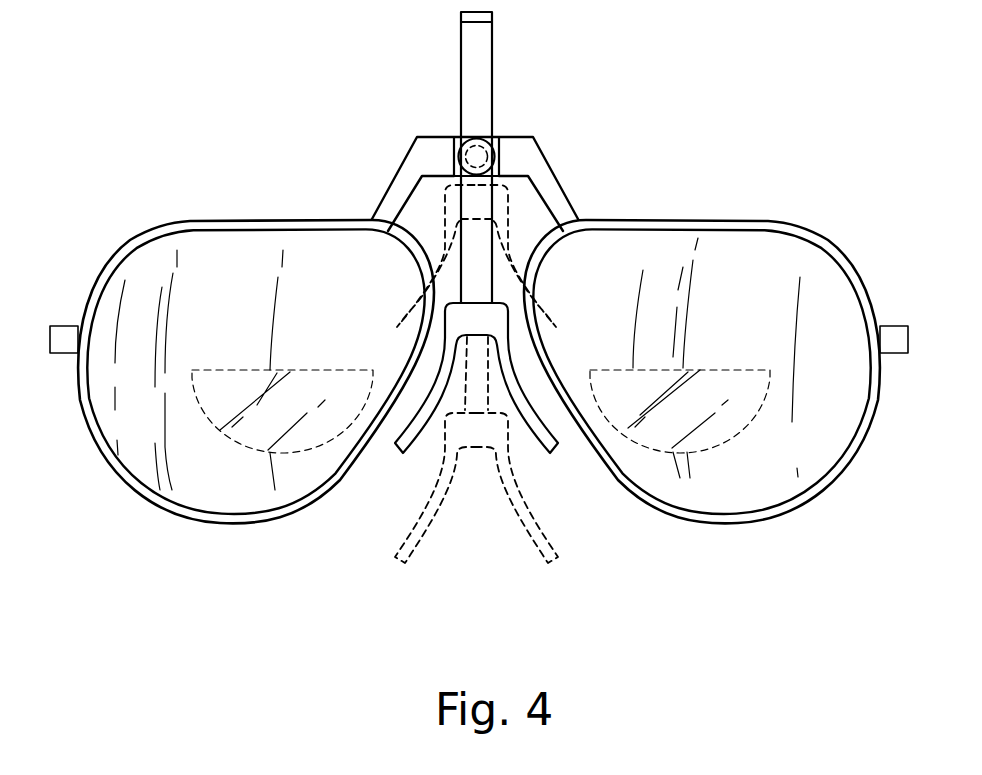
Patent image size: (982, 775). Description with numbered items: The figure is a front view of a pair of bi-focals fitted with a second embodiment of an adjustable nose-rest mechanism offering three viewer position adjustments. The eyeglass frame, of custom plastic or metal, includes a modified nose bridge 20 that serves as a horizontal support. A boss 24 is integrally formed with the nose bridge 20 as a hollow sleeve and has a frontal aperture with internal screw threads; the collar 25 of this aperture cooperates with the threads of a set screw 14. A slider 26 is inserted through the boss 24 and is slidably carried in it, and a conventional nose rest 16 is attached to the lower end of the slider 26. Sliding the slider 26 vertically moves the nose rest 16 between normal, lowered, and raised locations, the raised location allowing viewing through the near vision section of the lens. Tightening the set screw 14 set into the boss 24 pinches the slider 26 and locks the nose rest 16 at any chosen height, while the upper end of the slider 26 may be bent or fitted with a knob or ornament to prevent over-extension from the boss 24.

The nose bridge 20 is at (537, 135).
The boss 24 is at (465, 135).
The set screw 14 is at (488, 153).
The bore 25 is at (500, 155).
The slider 26 is at (465, 50).
The nose rest 16 is at (443, 230).